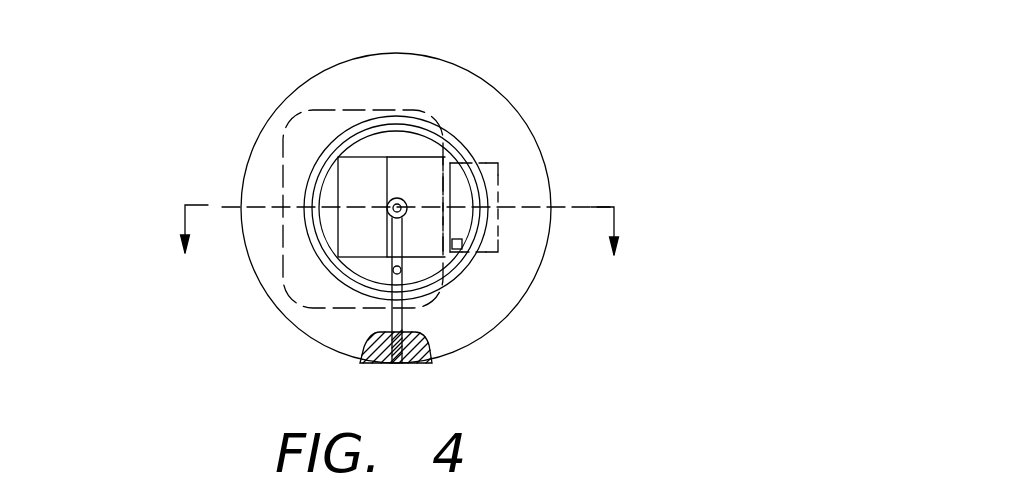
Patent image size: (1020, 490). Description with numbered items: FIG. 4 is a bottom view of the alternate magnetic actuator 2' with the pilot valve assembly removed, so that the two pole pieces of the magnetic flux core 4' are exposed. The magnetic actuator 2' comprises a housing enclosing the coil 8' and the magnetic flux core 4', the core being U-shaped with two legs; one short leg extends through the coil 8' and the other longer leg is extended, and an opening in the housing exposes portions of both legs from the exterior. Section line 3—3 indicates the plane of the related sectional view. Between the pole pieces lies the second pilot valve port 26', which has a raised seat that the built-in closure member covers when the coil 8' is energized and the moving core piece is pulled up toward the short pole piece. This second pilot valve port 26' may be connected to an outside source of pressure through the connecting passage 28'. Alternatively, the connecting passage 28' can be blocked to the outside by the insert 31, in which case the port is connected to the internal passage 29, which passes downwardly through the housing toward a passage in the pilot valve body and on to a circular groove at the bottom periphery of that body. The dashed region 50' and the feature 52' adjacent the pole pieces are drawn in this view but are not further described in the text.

The magnetic actuator 2' is at (481, 208).
The section line 3- 3 is at (399, 229).
The magnetic flux core 4' is at (401, 162).
The coil 8' is at (318, 154).
The second pilot valve port 26' is at (574, 269).
The connecting passage 28' is at (253, 329).
The internal passage 29 is at (393, 272).
The insert 31 is at (415, 360).
The valve block 50' is at (551, 134).
The valve port 52' is at (572, 326).